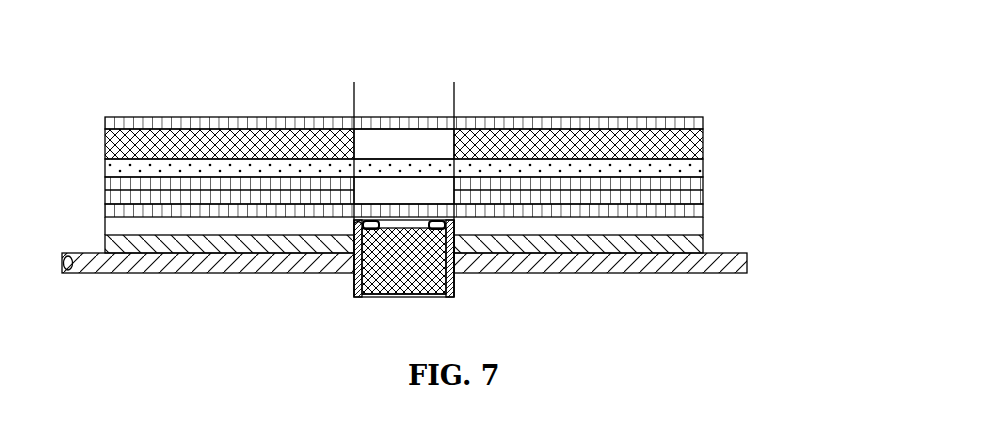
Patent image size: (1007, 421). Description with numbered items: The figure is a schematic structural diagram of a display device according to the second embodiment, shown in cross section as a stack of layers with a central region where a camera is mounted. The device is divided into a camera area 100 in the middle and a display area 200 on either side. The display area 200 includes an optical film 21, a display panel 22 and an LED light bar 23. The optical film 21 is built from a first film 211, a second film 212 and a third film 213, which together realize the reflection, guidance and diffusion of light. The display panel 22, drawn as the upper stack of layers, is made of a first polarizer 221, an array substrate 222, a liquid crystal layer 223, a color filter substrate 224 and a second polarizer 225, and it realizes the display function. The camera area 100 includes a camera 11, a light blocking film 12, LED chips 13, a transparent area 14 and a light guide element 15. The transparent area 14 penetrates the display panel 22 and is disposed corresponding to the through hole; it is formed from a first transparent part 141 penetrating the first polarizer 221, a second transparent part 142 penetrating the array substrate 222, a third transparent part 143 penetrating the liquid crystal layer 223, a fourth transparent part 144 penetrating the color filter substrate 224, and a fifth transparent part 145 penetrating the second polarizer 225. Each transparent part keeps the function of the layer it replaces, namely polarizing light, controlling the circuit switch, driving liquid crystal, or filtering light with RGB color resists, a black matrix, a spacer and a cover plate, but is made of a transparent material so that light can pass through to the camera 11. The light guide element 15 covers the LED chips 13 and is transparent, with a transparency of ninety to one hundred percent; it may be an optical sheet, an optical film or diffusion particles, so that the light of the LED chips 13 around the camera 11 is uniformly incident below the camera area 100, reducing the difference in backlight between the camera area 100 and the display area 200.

The camera area 100 is at (438, 97).
The display area 200 is at (160, 102).
The camera 11 is at (397, 288).
The light blocking film 12 is at (357, 285).
The LED chips 13 is at (440, 291).
The transparent area 14 is at (231, 12).
The first transparent part 141 is at (372, 208).
The second transparent part 142 is at (385, 187).
The third transparent part 143 is at (393, 170).
The fourth transparent part 144 is at (400, 148).
The fifth transparent part 145 is at (402, 123).
The light guide element 15 is at (356, 236).
The optical film 21 is at (787, 228).
The first film 211 is at (567, 265).
The second film 212 is at (642, 242).
The third film 213 is at (674, 227).
The display panel 22 is at (787, 103).
The first polarizer 221 is at (681, 212).
The array substrate 222 is at (681, 198).
The liquid crystal layer 223 is at (686, 170).
The color filter substrate 224 is at (681, 152).
The second polarizer 225 is at (680, 124).
The LED light bar 23 is at (71, 268).